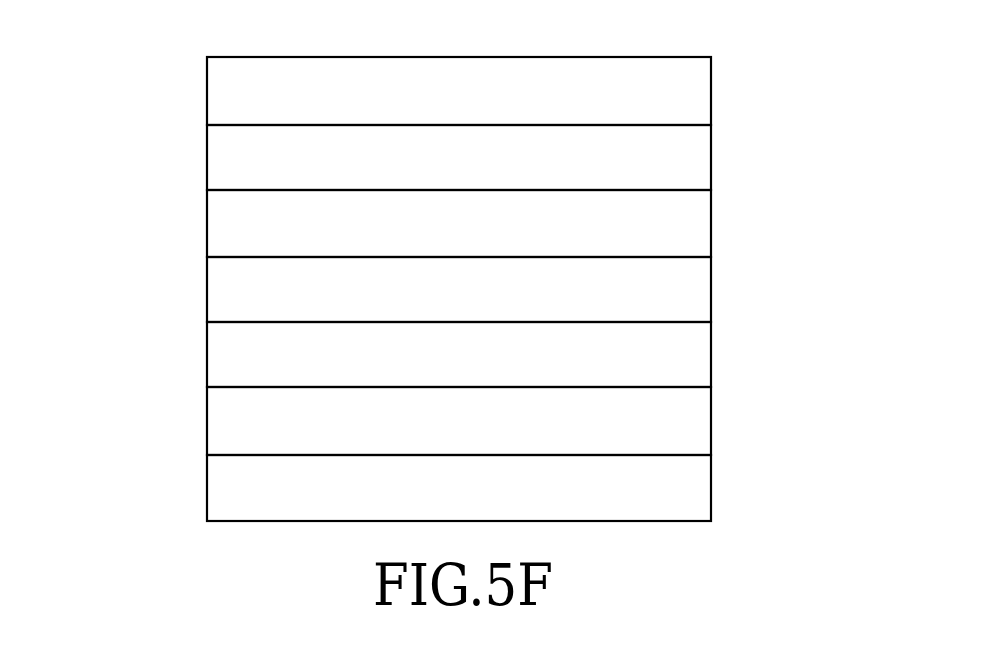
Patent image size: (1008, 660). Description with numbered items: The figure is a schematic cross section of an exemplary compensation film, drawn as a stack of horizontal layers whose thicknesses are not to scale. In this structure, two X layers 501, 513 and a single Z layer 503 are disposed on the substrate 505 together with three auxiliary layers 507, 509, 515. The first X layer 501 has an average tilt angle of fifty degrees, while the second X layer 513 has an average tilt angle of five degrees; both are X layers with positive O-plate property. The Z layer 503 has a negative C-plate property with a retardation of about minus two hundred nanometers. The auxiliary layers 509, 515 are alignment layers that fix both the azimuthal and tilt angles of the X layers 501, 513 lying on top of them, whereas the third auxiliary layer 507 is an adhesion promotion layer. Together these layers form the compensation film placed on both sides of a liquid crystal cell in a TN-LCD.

The second X layer 513 is at (209, 91).
The auxiliary layer 515 is at (711, 166).
The first X layer 501 is at (217, 218).
The auxiliary layer 509 is at (711, 290).
The Z layer 503 is at (208, 352).
The auxiliary layer 507 is at (711, 421).
The substrate 505 is at (217, 500).